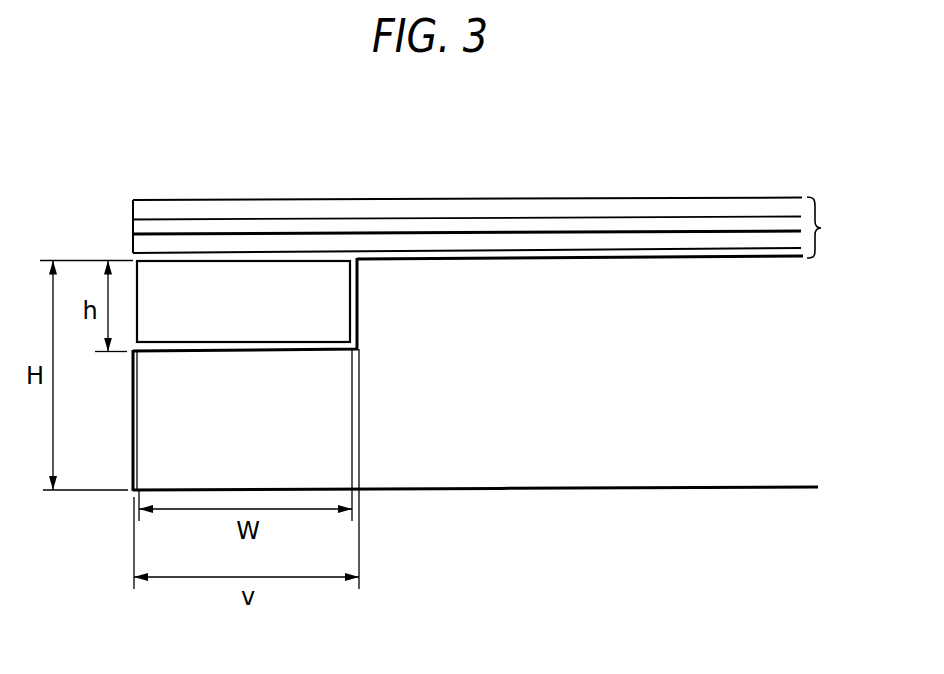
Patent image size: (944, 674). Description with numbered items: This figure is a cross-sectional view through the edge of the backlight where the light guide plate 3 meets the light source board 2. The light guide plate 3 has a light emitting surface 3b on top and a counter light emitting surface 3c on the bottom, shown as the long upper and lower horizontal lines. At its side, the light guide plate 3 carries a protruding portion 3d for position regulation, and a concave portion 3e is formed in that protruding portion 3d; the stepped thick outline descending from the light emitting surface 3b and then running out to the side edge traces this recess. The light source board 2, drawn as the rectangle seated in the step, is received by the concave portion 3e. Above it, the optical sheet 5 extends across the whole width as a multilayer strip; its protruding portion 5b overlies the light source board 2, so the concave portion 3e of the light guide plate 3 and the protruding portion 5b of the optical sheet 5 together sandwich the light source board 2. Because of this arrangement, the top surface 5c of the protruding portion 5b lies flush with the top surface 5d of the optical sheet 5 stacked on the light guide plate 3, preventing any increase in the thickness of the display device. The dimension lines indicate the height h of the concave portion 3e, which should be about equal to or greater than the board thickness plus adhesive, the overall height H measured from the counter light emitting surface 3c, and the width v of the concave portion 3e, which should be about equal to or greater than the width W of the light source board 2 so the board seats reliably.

The light source board 2 is at (243, 275).
The light guide plate 3 is at (660, 448).
The light emitting surface 3b is at (660, 256).
The counter light emitting surface 3c is at (532, 489).
The protruding portion 3d is at (148, 463).
The concave portion 3e is at (357, 259).
The optical sheet 5 is at (487, 227).
The protruding portion of the optical sheet 5b is at (176, 200).
The top surface of the protruding portion of the optical sheet 5c is at (303, 200).
The top surface of the optical sheet 5d is at (529, 200).